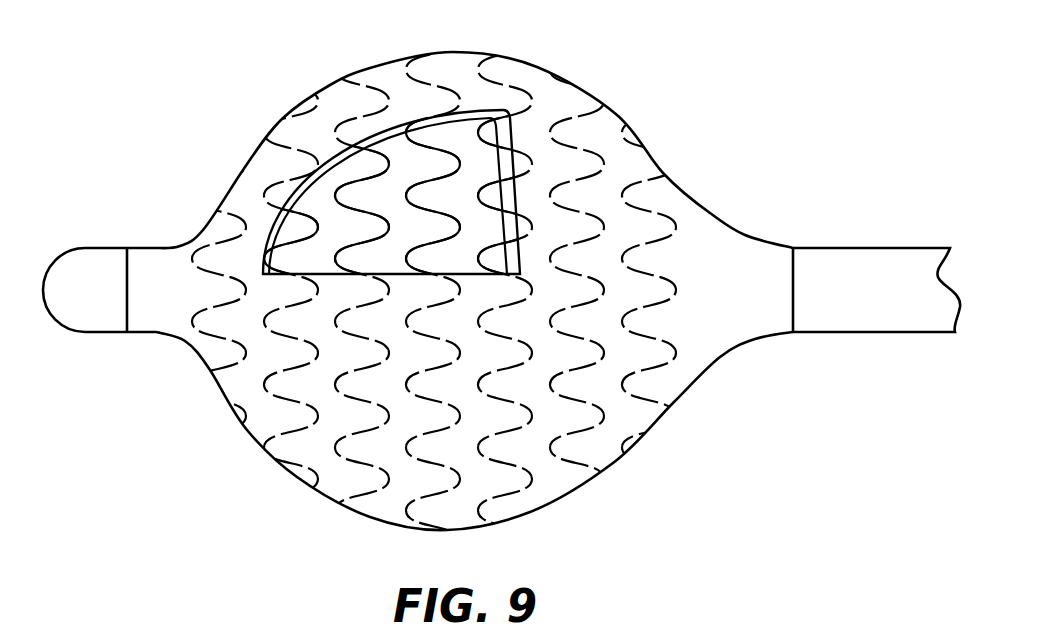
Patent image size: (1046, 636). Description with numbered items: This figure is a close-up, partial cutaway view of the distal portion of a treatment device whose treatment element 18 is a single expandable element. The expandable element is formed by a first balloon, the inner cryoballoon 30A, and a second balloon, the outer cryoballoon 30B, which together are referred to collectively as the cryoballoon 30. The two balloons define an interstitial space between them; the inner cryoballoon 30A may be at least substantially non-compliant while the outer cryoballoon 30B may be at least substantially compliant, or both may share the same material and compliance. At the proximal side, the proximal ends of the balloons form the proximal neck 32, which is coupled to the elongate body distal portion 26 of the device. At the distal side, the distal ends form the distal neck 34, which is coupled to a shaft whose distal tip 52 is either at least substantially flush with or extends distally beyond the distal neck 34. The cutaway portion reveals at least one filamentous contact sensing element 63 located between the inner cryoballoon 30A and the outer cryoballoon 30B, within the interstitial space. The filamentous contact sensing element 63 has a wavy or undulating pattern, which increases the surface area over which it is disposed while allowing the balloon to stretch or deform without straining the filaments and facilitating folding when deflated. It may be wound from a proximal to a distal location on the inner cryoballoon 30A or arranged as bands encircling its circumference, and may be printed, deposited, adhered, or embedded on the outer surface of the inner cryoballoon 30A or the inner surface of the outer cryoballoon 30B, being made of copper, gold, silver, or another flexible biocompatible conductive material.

The treatment element 18 is at (237, 456).
The elongate body distal portion 26 is at (907, 248).
The cryoballoon 30 is at (456, 302).
The inner cryoballoon 30A is at (400, 150).
The outer cryoballoon 30B is at (618, 116).
The proximal neck 32 is at (758, 240).
The distal neck 34 is at (155, 247).
The distal tip 52 is at (75, 307).
The filamentous contact sensing element 63 is at (452, 148).